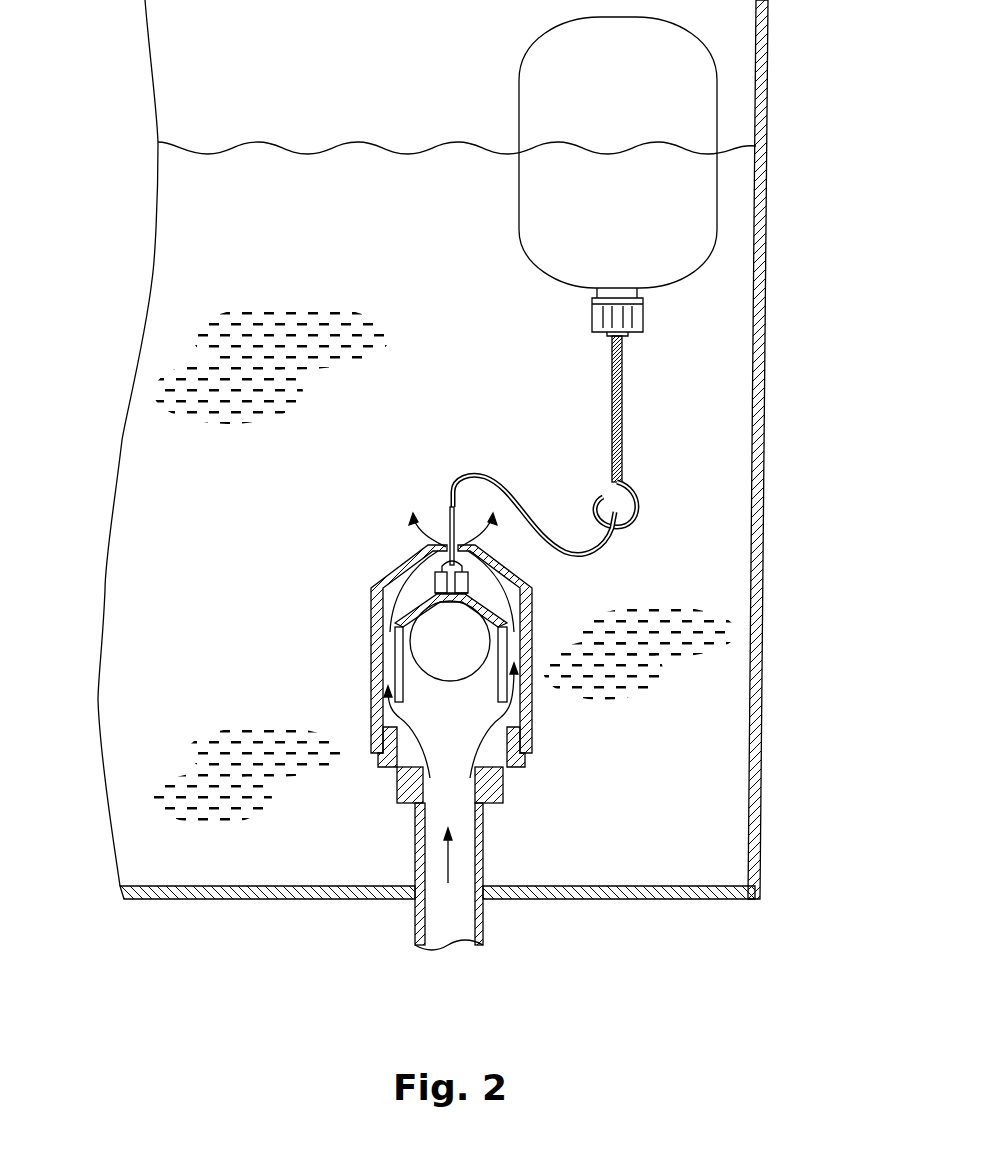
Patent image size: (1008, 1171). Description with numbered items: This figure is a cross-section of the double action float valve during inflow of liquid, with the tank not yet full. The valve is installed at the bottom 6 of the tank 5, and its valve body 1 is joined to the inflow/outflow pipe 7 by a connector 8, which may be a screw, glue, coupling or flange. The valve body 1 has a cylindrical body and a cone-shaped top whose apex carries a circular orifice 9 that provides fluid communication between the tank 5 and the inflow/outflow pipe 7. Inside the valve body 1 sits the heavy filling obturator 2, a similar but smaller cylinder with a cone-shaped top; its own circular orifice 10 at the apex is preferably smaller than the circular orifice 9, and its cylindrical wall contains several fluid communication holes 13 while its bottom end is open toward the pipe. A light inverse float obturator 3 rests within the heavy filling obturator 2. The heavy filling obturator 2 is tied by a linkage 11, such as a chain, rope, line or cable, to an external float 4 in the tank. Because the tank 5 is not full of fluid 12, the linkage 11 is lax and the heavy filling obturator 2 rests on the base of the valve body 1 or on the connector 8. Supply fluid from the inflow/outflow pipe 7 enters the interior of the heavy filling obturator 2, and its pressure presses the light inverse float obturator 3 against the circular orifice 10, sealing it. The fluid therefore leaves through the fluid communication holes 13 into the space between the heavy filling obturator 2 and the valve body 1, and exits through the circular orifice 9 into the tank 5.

The valve body 1 is at (540, 597).
The heavy filling obturator 2 is at (400, 660).
The light inverse float obturator 3 is at (490, 642).
The external float 4 is at (718, 212).
The tank 5 is at (766, 358).
The bottom 6 is at (710, 900).
The inflow/outflow pipe 7 is at (483, 850).
The connector 8 is at (520, 765).
The circular orifice 9 is at (440, 547).
The circular orifice 10 is at (383, 597).
The linkage 11 is at (607, 544).
The fluid 12 is at (243, 230).
The fluid communication holes 13 is at (385, 718).